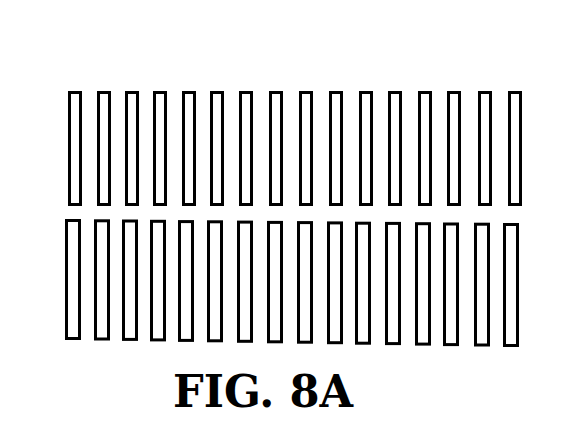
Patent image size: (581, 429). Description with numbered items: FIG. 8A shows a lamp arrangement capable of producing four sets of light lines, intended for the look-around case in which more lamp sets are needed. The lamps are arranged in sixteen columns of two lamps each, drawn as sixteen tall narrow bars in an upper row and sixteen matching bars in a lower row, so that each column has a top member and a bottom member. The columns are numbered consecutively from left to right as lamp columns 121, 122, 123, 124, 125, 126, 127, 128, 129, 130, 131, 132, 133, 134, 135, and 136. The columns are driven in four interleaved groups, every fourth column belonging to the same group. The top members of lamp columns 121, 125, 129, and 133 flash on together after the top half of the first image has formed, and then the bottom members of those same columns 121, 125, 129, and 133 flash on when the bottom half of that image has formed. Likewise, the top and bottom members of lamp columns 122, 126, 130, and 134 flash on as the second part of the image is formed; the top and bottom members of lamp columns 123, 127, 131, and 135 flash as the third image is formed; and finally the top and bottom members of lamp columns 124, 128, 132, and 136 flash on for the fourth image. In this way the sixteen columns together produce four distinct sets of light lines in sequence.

The lamp column 121 is at (76, 97).
The lamp column 122 is at (104, 99).
The lamp column 123 is at (132, 99).
The lamp column 124 is at (160, 99).
The lamp column 125 is at (189, 99).
The lamp column 126 is at (217, 99).
The lamp column 127 is at (246, 99).
The lamp column 128 is at (276, 99).
The lamp column 129 is at (306, 99).
The lamp column 130 is at (336, 99).
The lamp column 131 is at (366, 99).
The lamp column 132 is at (395, 99).
The lamp column 133 is at (425, 99).
The lamp column 134 is at (454, 99).
The lamp column 135 is at (485, 99).
The lamp column 136 is at (515, 99).